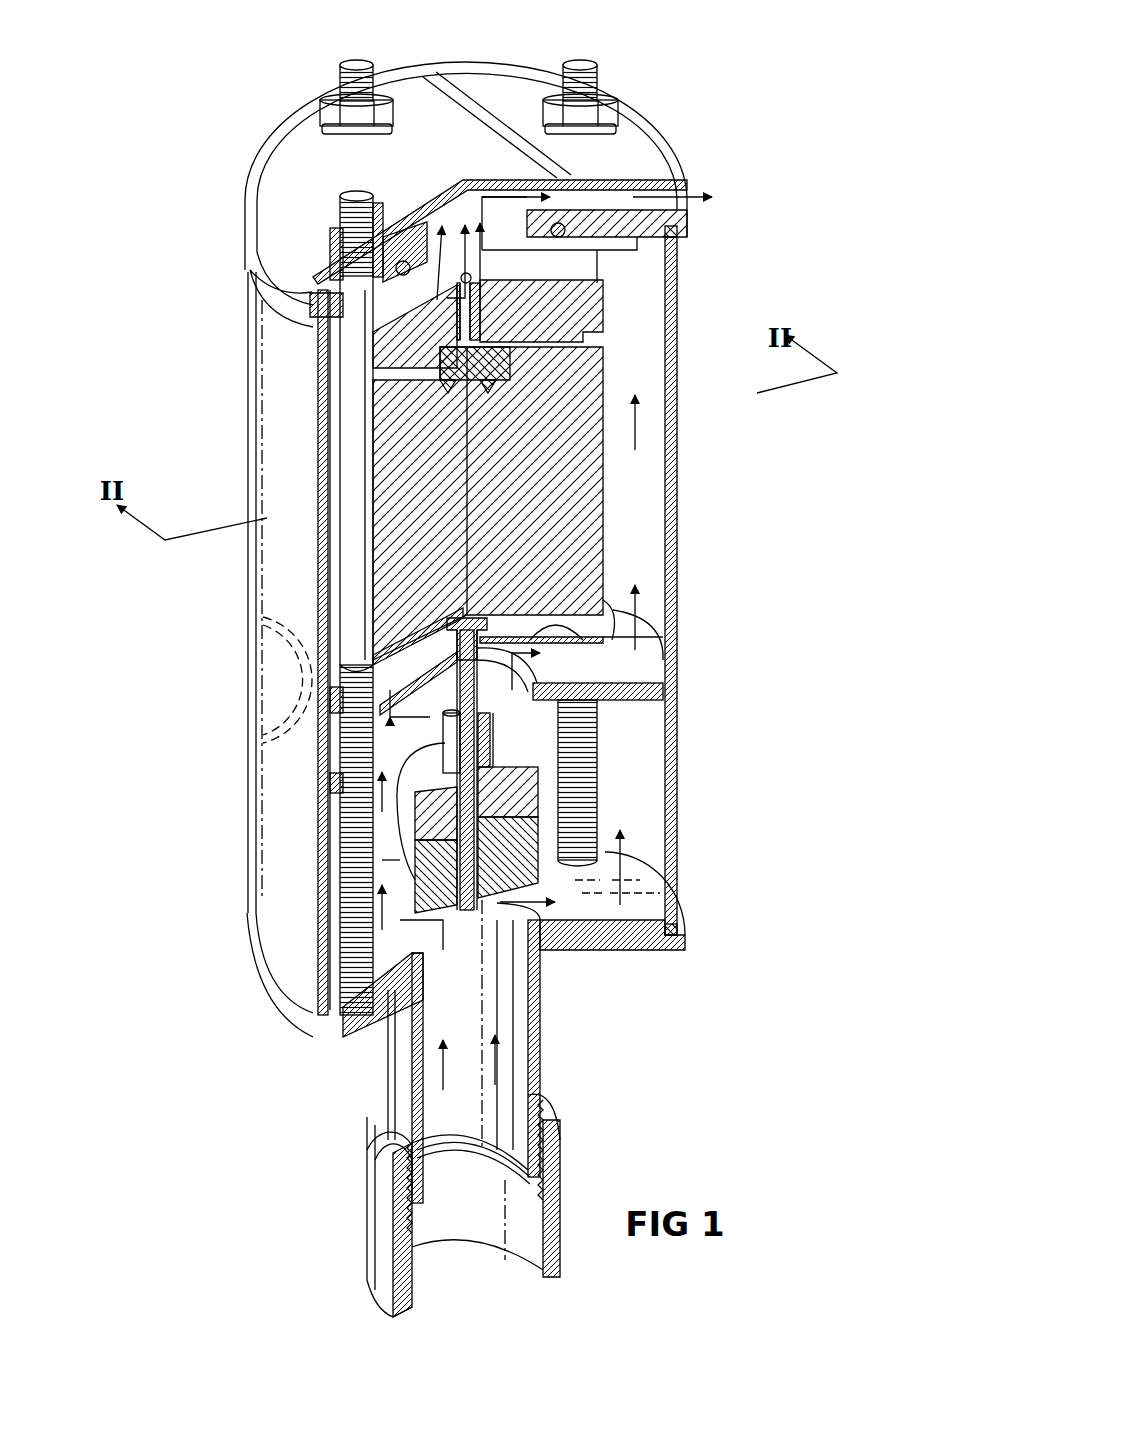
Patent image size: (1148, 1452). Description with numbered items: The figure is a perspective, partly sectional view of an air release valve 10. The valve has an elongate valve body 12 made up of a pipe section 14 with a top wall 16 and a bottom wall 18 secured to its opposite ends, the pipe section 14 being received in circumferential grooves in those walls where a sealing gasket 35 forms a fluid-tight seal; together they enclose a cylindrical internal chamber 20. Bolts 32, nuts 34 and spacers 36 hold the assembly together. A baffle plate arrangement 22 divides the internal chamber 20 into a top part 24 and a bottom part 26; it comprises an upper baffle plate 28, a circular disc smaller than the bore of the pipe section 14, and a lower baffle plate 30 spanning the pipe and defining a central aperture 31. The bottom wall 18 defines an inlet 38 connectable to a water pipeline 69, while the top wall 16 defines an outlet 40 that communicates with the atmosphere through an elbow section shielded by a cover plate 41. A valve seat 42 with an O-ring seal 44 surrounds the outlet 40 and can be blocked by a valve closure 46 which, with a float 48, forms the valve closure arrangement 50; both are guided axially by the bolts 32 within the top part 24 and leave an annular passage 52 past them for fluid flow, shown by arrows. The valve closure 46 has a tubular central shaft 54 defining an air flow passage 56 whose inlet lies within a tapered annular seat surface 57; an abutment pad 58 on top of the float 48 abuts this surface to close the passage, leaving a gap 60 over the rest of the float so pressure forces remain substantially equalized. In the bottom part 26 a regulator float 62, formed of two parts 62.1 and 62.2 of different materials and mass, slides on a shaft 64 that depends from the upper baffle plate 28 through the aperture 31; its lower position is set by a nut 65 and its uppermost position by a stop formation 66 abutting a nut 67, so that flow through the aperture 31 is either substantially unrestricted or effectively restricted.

The air release valve 10 is at (694, 68).
The valve body 12 is at (680, 282).
The pipe section 14 is at (668, 396).
The top wall 16 is at (670, 217).
The bottom wall 18 is at (617, 938).
The internal chamber 20 is at (636, 358).
The baffle plate arrangement 22 is at (652, 628).
The top part 24 is at (632, 537).
The bottom part 26 is at (622, 758).
The upper baffle plate 28 is at (593, 626).
The lower baffle plate 30 is at (640, 677).
The central aperture 31 is at (496, 681).
The bolts 32 is at (357, 568).
The nuts 34 is at (605, 102).
The sealing gasket 35 is at (668, 230).
The spacers 36 is at (330, 733).
The inlet 38 is at (467, 922).
The outlet 40 is at (438, 261).
The cover plate 41 is at (632, 145).
The valve seat 42 is at (385, 300).
The O-ring seal 44 is at (403, 261).
The valve closure 46 is at (390, 353).
The float 48 is at (400, 487).
The valve closure arrangement 50 is at (608, 482).
The annular passage 52 is at (632, 504).
The tubular central shaft 54 is at (480, 298).
The air flow passage 56 is at (480, 278).
The annular seat surface 57 is at (487, 340).
The abutment pad 58 is at (488, 362).
The gap 60 is at (378, 395).
The regulator float 62 is at (395, 867).
The first part of regulator float 62.1 is at (403, 860).
The second part of regulator float 62.2 is at (403, 811).
The shaft 64 is at (433, 806).
The nut 65 is at (485, 900).
The stop formation 66 is at (447, 666).
The nut 67 is at (492, 636).
The water pipeline 69 is at (382, 1190).